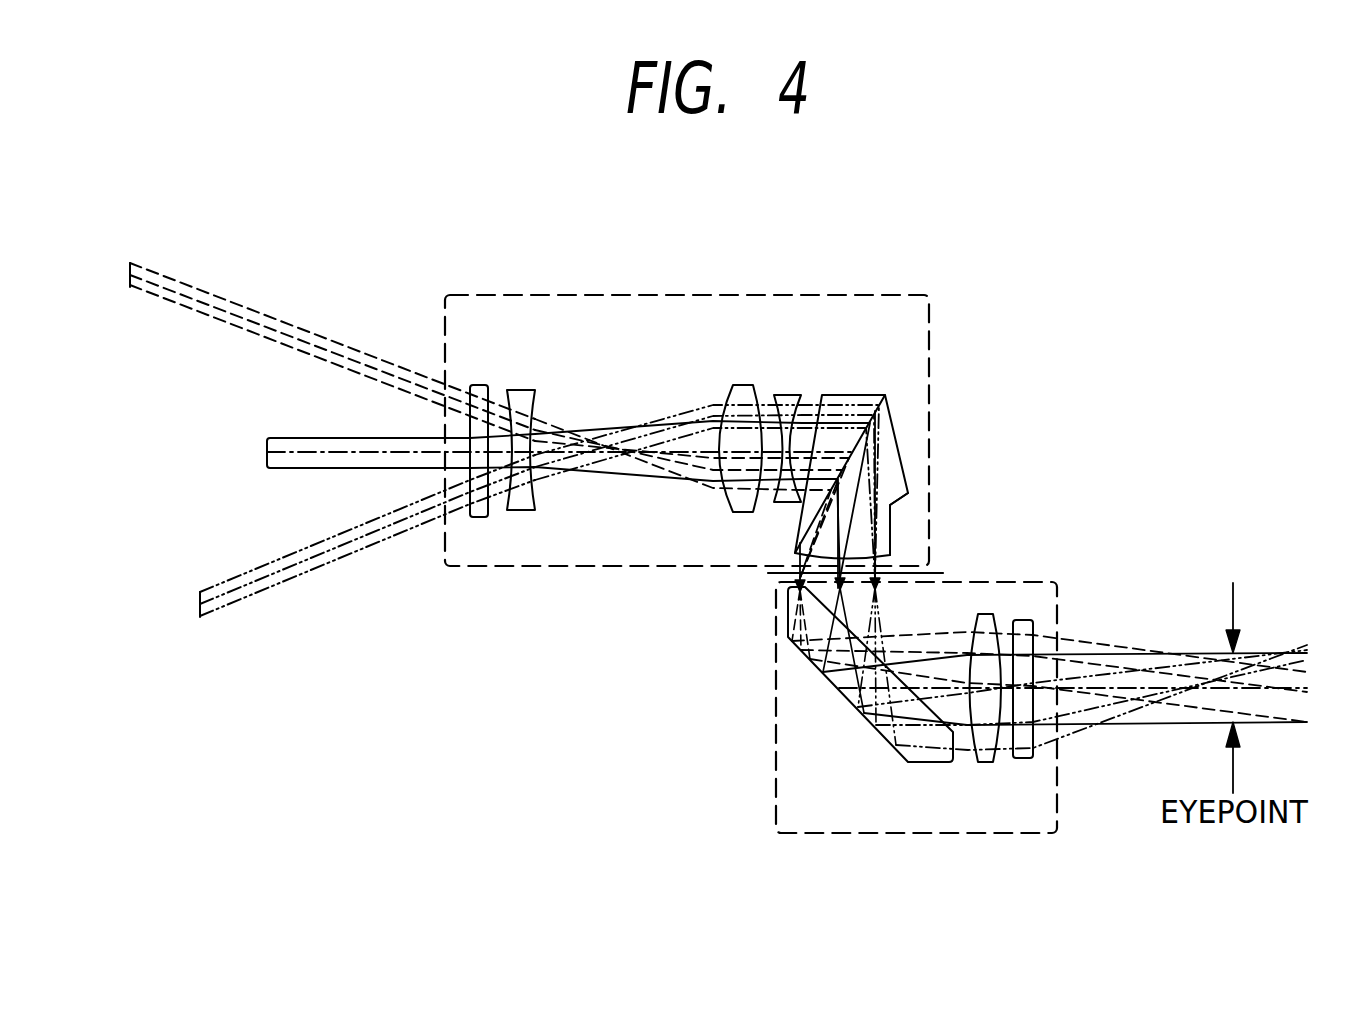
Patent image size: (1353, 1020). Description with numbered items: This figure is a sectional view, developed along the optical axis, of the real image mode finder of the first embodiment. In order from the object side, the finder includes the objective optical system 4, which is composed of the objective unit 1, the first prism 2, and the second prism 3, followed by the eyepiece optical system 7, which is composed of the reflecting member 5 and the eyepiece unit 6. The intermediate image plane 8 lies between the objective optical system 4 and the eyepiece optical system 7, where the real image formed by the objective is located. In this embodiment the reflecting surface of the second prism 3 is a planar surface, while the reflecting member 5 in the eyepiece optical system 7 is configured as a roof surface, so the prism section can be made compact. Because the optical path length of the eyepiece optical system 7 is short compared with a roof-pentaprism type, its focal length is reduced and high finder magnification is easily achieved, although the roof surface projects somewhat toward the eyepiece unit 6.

The objective unit 1 is at (812, 373).
The first prism 2 is at (848, 398).
The second prism 3 is at (900, 441).
The objective optical system 4 is at (572, 295).
The reflecting member 5 is at (853, 702).
The eyepiece unit 6 is at (1047, 768).
The eyepiece optical system 7 is at (1032, 580).
The intermediate image plane 8 is at (936, 572).